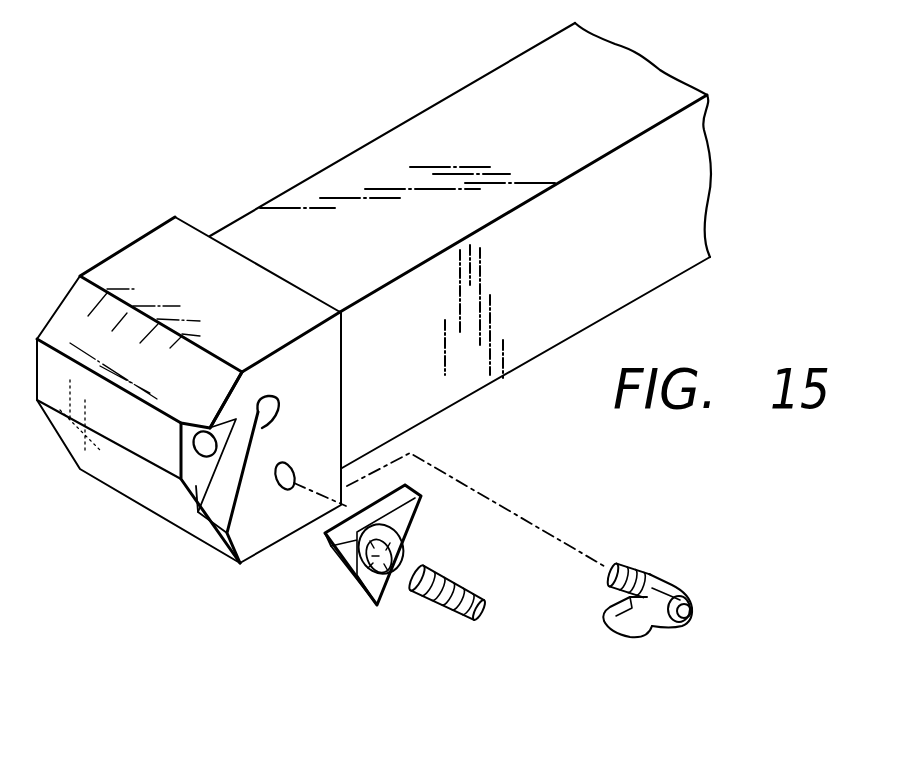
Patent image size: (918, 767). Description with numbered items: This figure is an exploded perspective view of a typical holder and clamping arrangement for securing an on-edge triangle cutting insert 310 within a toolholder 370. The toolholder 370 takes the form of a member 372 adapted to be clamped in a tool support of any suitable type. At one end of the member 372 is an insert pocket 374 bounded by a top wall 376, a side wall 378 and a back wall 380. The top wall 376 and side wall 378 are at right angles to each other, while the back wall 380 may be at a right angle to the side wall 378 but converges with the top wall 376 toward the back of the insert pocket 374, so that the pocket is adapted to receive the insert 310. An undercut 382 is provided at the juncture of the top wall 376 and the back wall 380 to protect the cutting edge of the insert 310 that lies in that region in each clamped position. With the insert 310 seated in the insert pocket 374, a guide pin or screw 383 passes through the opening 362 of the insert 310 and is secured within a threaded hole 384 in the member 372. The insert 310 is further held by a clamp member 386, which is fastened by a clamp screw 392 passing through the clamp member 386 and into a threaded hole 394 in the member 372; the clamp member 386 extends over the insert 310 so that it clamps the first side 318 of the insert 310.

The toolholder 370 is at (286, 103).
The member 372 is at (457, 125).
The insert pocket 374 is at (201, 536).
The top wall 376 is at (247, 410).
The side wall 378 is at (193, 496).
The back wall 380 is at (253, 487).
The undercut 382 is at (276, 408).
The threaded hole 384 is at (194, 447).
The threaded hole 394 is at (292, 463).
The insert 310 is at (360, 594).
The first side 318 is at (404, 530).
The opening 362 is at (397, 578).
The guide pin or screw 383 is at (458, 580).
The clamp member 386 is at (638, 626).
The clamp screw 392 is at (632, 567).